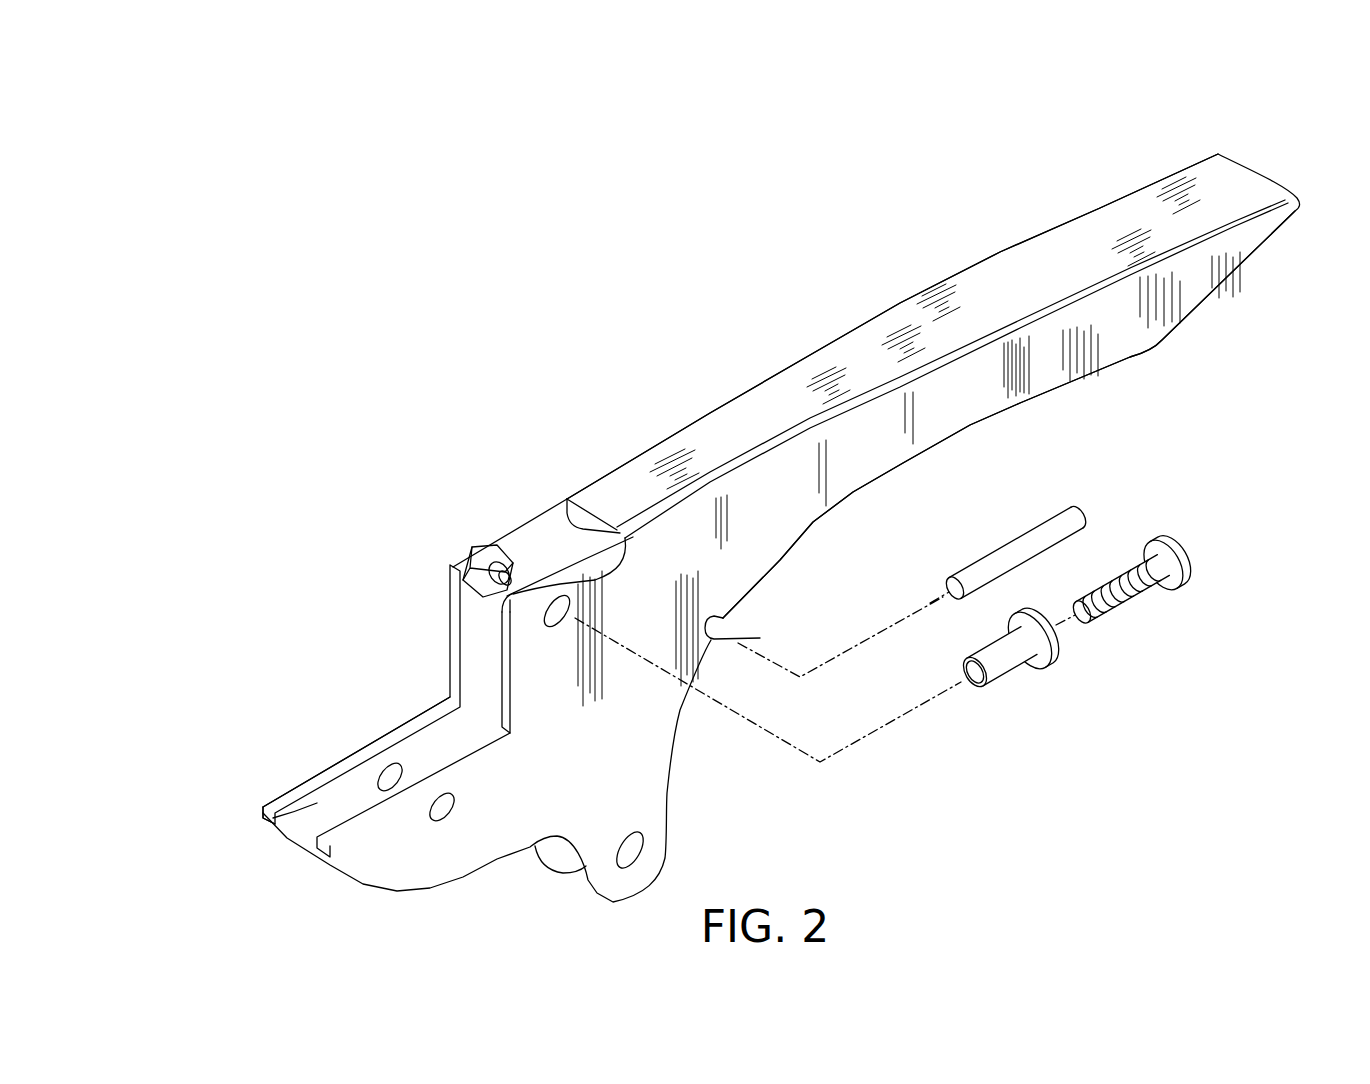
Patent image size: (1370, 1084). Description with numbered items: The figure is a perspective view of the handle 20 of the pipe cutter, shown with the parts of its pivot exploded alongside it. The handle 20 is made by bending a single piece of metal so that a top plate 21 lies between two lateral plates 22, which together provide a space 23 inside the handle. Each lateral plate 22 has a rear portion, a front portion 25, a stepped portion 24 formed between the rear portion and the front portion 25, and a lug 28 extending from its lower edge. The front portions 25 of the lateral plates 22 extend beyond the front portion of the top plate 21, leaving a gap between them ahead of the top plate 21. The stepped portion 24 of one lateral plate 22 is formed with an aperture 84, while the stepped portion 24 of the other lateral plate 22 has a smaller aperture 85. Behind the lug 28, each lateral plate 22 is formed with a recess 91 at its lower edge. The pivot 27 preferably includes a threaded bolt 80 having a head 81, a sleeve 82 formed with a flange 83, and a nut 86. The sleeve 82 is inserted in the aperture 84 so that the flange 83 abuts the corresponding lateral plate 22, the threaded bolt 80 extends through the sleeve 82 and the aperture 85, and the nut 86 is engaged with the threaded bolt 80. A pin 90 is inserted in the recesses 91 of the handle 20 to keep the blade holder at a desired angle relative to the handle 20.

The handle 20 is at (1060, 100).
The top plate 21 is at (1057, 278).
The lateral plates 22 is at (1155, 307).
The space 23 is at (565, 499).
The stepped portion 24 is at (470, 642).
The front portion 25 is at (283, 830).
The pivot 27 is at (1177, 541).
The lug 28 is at (657, 848).
The threaded bolt 80 is at (1130, 597).
The head 81 is at (1183, 563).
The sleeve 82 is at (1005, 668).
The flange 83 is at (1055, 657).
The aperture 84 is at (575, 609).
The aperture 85 is at (614, 570).
The nut 86 is at (497, 547).
The pin 90 is at (1045, 527).
The recess 91 is at (760, 638).